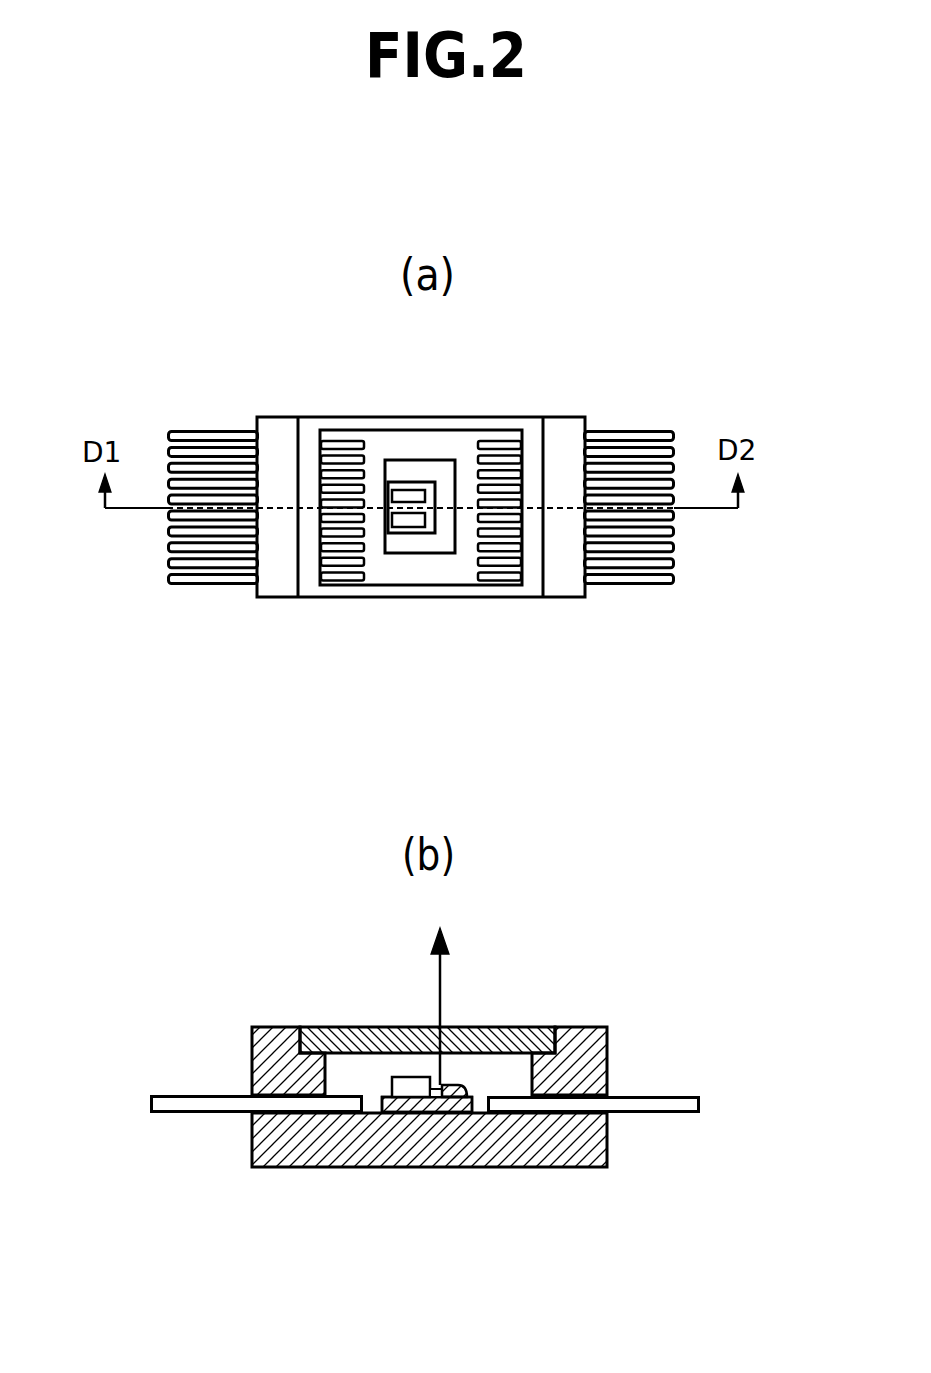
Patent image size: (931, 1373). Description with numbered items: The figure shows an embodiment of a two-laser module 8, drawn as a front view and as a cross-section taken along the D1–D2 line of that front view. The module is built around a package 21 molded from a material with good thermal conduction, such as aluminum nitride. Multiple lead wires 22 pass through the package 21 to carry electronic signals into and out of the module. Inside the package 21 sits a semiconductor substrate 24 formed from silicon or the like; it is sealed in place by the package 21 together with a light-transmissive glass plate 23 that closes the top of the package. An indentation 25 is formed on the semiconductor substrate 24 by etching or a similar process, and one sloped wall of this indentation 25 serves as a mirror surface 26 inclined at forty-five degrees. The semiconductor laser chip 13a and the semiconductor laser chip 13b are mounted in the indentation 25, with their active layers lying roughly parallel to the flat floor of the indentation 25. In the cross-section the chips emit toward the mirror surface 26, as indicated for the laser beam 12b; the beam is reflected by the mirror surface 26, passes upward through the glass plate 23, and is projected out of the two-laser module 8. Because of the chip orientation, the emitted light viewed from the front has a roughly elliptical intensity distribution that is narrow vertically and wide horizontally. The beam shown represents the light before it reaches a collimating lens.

The two-laser module 8 is at (573, 417).
The package 21 is at (257, 418).
The lead wires 22 is at (208, 588).
The glass plate 23 is at (532, 1025).
The semiconductor substrate 24 is at (433, 553).
The indentation 25 is at (430, 482).
The mirror surface 26 is at (450, 1112).
The semiconductor laser chip 13a is at (413, 527).
The semiconductor laser chip 13b is at (402, 490).
The laser beam 12b is at (442, 1002).